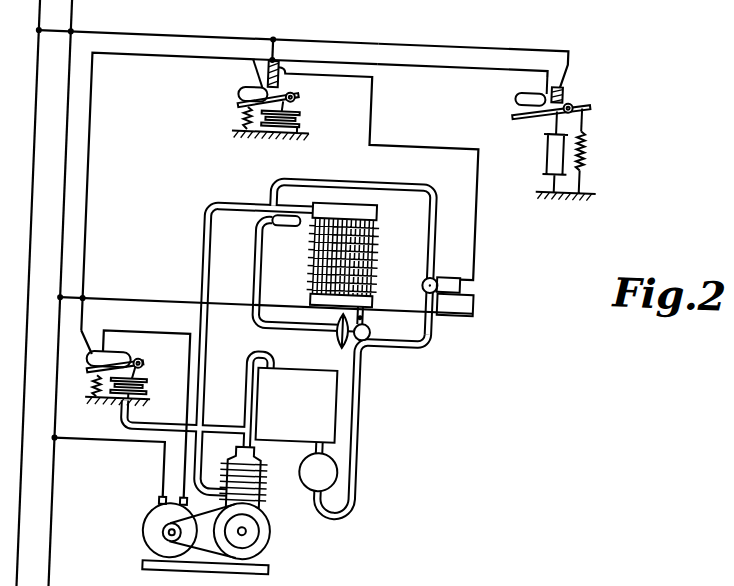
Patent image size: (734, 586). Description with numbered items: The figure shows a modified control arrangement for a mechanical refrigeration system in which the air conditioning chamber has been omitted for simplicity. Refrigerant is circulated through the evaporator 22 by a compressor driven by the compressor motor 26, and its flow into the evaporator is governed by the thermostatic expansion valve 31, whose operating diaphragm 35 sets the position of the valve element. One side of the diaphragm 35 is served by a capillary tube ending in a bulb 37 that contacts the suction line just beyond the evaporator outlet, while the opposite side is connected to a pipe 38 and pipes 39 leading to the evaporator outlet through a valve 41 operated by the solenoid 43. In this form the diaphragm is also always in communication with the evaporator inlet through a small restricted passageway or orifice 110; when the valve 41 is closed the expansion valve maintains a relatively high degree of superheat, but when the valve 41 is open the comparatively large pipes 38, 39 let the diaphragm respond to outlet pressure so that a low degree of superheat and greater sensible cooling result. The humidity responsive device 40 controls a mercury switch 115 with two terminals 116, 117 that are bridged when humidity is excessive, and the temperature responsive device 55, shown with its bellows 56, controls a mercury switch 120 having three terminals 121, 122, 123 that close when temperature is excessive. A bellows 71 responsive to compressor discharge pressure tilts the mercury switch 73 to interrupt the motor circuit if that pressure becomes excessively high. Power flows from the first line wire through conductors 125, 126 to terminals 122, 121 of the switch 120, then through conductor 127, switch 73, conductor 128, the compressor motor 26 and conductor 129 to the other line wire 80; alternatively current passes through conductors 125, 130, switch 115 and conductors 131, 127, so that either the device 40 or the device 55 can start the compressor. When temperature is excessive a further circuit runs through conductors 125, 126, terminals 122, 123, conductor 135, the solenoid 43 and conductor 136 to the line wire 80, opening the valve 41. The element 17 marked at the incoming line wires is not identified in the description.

The power supply conductor 17 is at (42, 19).
The evaporator 22 is at (322, 245).
The compressor motor 26 is at (173, 538).
The expansion valve 31 is at (383, 318).
The operating diaphragm 35 is at (351, 323).
The bulb 37 is at (294, 214).
The pipe 38 is at (406, 331).
The pipes 39 is at (445, 222).
The humidity responsive device 40 is at (545, 126).
The valve 41 is at (432, 263).
The solenoid 43 is at (461, 260).
The thermostat 55 is at (291, 116).
The bellows 56 is at (308, 106).
The bellows 71 is at (161, 381).
The mercury switch 73 is at (139, 350).
The line wire 80 is at (72, 359).
The restricted passageway 110 is at (375, 303).
The mercury switch 115 is at (539, 76).
The terminal 116 is at (556, 52).
The terminal 117 is at (571, 69).
The mercury switch 120 is at (242, 78).
The terminal 121 is at (258, 70).
The terminal 122 is at (283, 52).
The terminal 123 is at (296, 79).
The conductor 125 is at (162, 28).
The conductor 126 is at (277, 28).
The conductor 127 is at (96, 207).
The conductor 128 is at (166, 326).
The conductor 129 is at (104, 436).
The conductor 130 is at (411, 28).
The conductor 131 is at (407, 50).
The conductor 135 is at (431, 130).
The conductor 136 is at (468, 297).